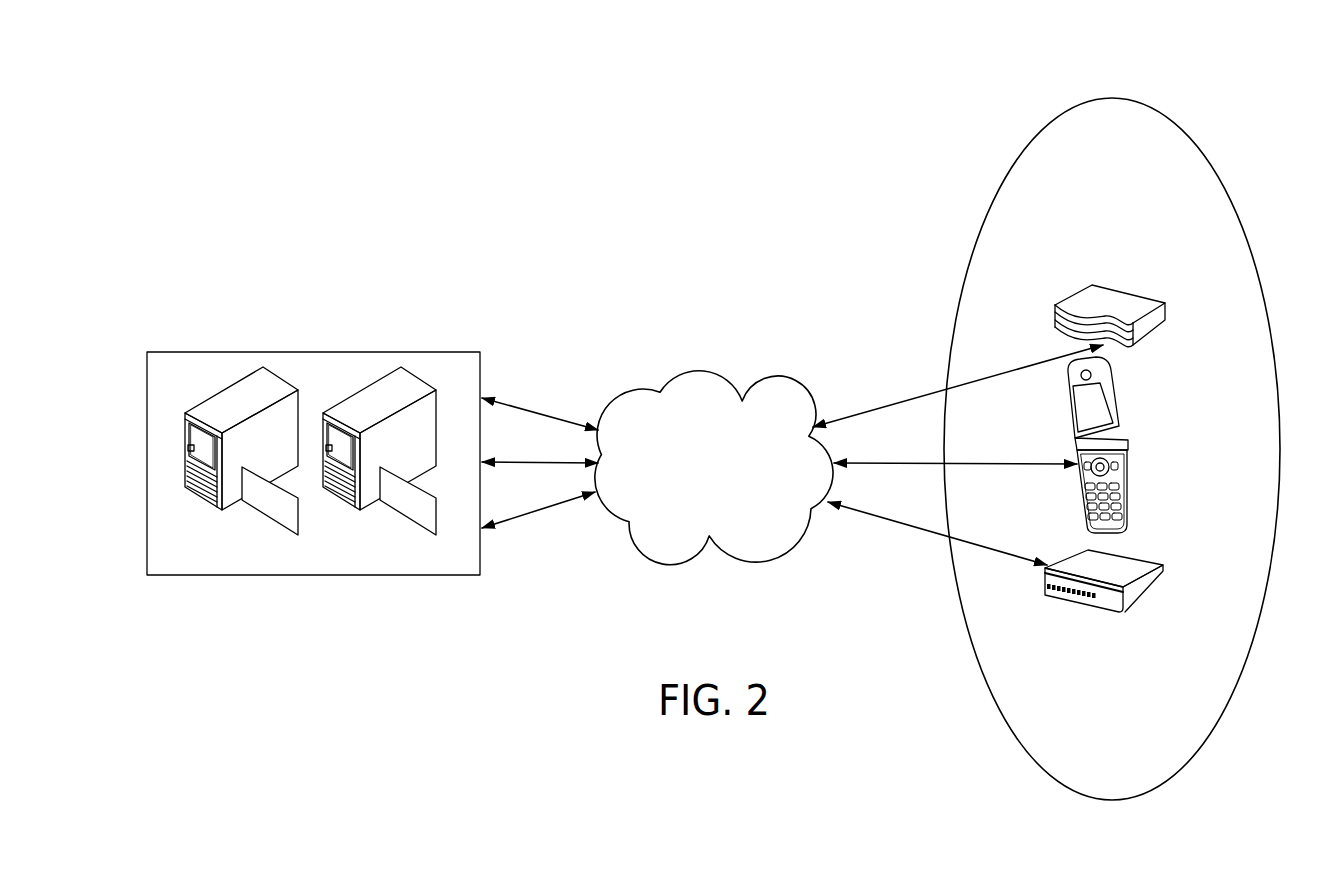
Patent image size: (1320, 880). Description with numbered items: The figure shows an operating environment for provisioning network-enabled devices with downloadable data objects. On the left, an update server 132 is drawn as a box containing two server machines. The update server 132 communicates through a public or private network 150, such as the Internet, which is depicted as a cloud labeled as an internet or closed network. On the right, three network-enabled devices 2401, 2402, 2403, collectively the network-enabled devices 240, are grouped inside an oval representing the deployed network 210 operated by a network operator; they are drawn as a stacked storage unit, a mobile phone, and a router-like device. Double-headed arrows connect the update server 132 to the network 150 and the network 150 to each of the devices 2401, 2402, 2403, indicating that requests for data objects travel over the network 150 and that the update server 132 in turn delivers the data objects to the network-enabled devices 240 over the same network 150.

The update server 132 is at (313, 352).
The public or private network 150 is at (697, 373).
The deployed network 210 is at (1112, 98).
The network-enabled devices 240 is at (1124, 458).
The network-enabled device 2401 is at (1128, 293).
The network-enabled device 2402 is at (1130, 483).
The network-enabled device 2403 is at (1082, 608).